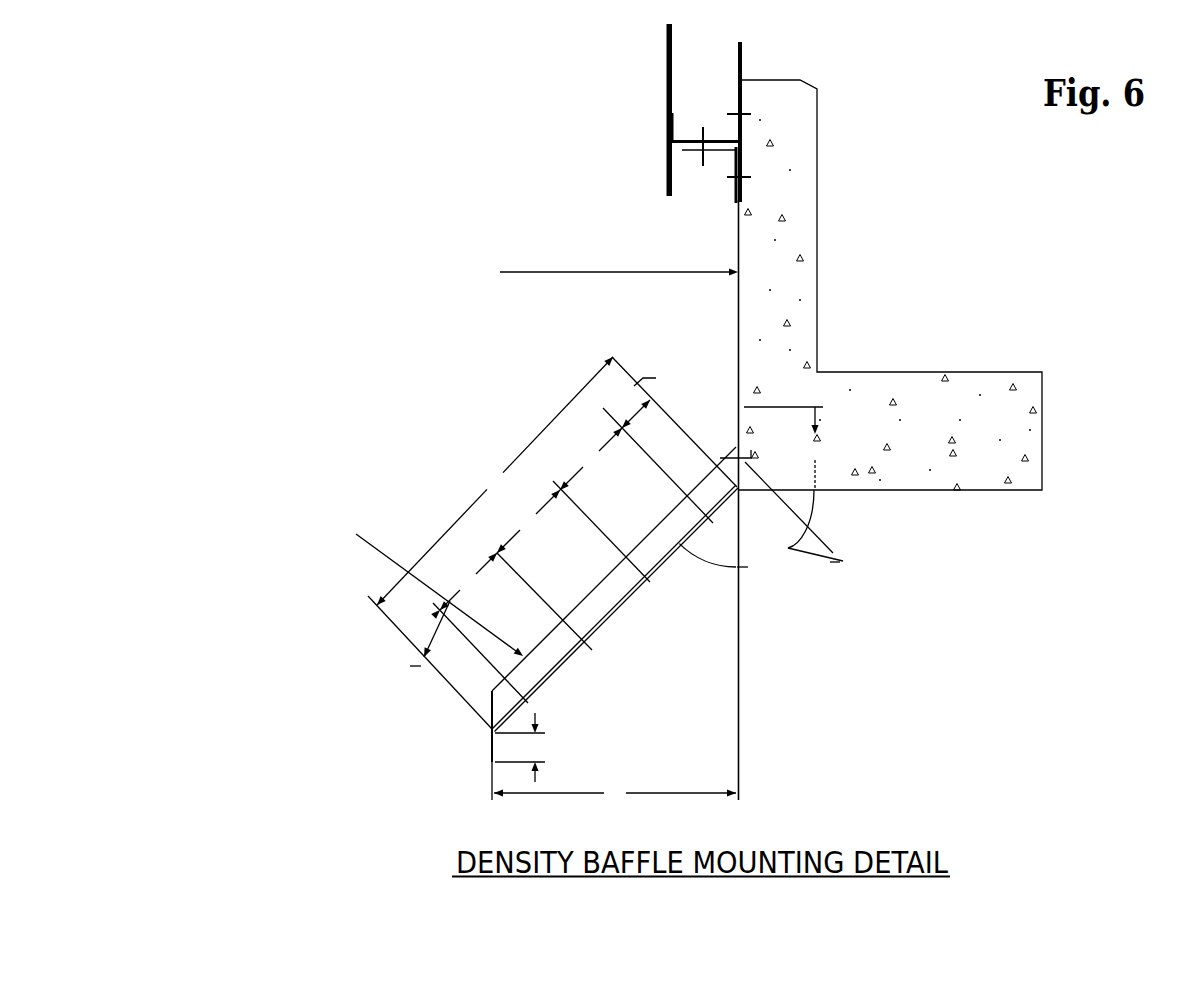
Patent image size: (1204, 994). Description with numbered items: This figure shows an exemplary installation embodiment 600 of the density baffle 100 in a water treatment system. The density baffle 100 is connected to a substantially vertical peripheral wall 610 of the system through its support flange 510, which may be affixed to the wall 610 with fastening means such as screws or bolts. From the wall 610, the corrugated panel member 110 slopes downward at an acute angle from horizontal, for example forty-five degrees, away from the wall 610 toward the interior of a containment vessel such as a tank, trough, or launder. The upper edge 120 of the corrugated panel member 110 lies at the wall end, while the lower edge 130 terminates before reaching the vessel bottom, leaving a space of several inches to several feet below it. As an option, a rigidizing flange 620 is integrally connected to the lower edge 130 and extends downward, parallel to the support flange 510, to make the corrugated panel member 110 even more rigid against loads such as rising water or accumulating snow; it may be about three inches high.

The installation embodiment 600 is at (296, 165).
The vertical peripheral wall 610 is at (758, 243).
The support flange 510 is at (737, 437).
The upper edge 120 is at (741, 511).
The density baffle 100 is at (633, 622).
The corrugated panel member 110 is at (610, 593).
The lower edge 130 is at (492, 703).
The rigidizing flange 620 is at (492, 743).